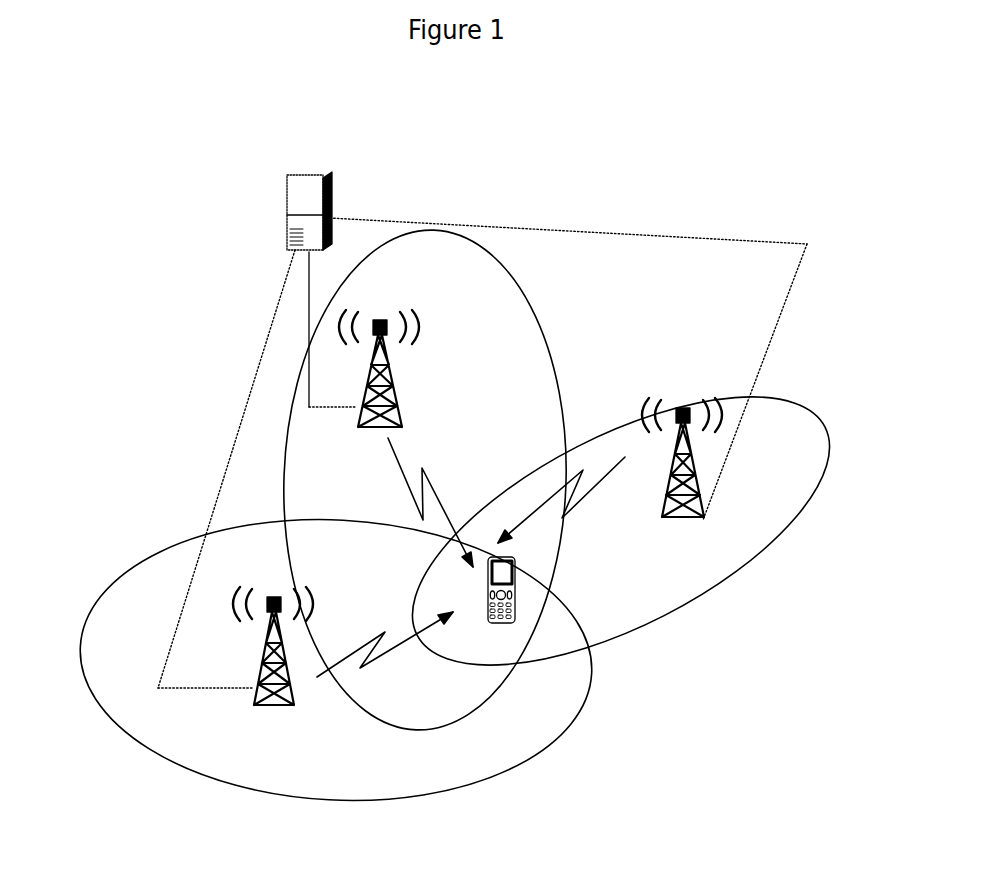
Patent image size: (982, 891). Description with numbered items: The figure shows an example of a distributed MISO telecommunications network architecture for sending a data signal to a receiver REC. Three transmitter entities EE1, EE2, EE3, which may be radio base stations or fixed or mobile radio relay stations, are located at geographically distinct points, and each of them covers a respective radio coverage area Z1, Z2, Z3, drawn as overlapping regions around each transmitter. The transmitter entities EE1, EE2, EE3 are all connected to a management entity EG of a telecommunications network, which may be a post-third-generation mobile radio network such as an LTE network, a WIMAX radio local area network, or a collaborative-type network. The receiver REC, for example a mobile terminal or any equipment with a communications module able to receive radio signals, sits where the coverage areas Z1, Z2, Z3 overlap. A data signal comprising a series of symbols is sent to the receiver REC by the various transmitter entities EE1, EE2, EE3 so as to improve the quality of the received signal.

The management entity EG is at (287, 227).
The transmitter entity EE1 is at (368, 378).
The transmitter entity EE2 is at (253, 700).
The transmitter entity EE3 is at (663, 520).
The radio coverage area Z1 is at (498, 258).
The radio coverage area Z2 is at (400, 788).
The radio coverage area Z3 is at (647, 632).
The receiver REC is at (503, 622).